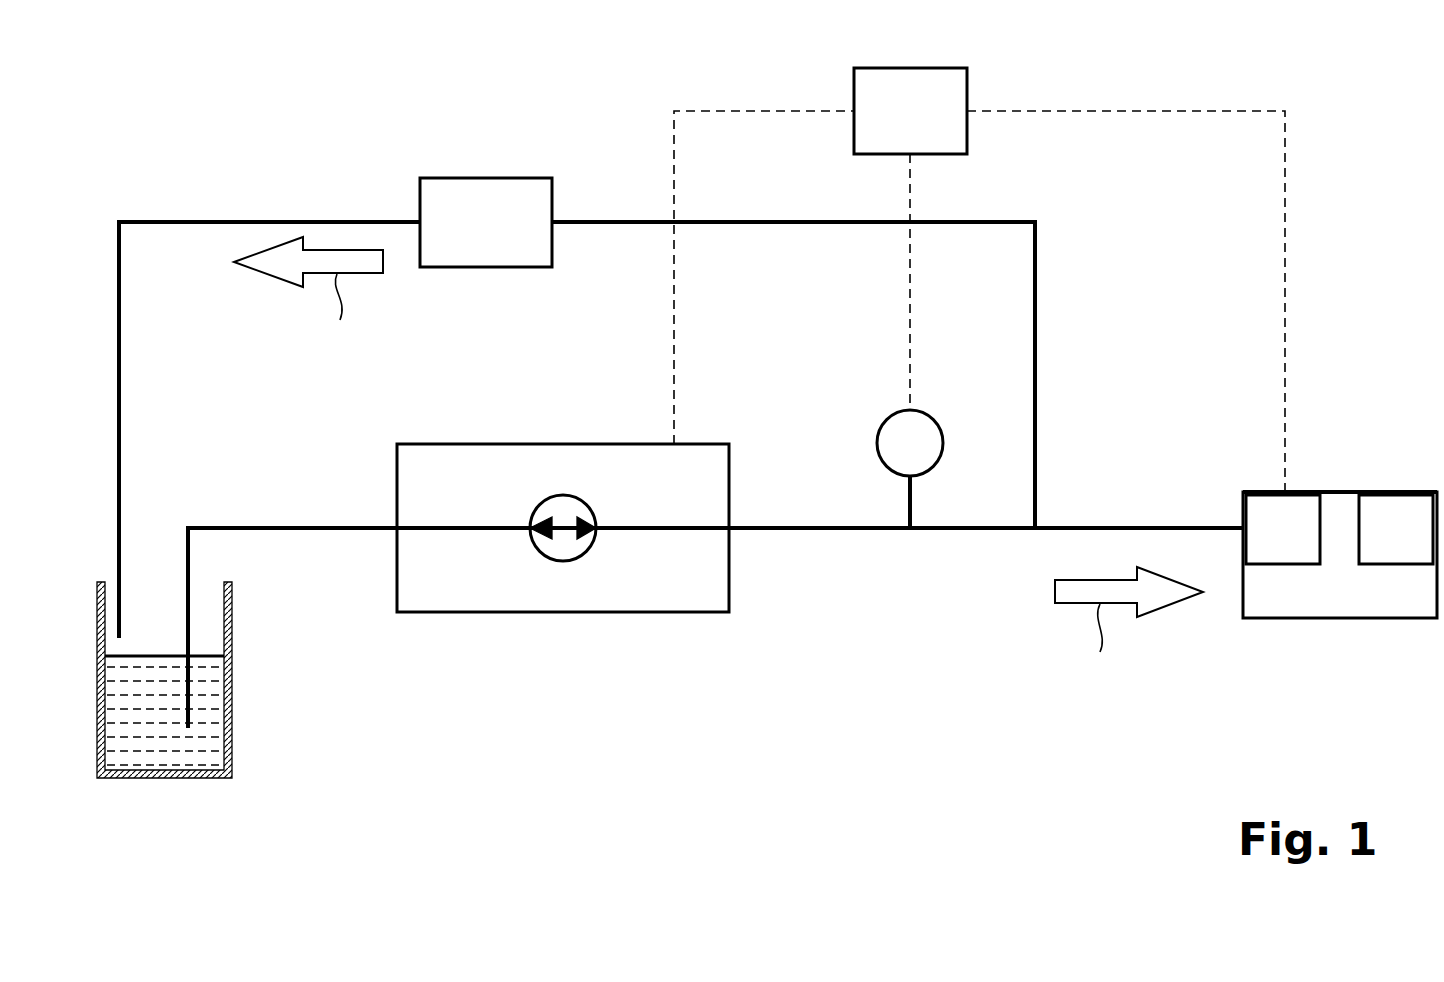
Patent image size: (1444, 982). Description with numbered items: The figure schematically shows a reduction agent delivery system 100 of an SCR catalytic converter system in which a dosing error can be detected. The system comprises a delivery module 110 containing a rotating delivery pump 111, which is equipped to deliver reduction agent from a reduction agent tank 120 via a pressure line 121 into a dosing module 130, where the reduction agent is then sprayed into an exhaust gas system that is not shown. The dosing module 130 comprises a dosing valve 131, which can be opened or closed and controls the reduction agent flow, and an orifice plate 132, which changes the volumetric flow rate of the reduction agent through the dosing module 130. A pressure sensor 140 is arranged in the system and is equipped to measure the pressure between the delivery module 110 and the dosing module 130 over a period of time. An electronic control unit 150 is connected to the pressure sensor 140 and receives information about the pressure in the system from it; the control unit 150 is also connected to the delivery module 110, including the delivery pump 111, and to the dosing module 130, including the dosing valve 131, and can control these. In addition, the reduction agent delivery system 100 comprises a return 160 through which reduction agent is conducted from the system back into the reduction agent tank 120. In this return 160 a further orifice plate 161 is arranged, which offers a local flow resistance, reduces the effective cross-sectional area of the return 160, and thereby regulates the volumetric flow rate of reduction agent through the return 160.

The reduction agent delivery system 100 is at (222, 128).
The delivery module 110 is at (466, 612).
The delivery pump 111 is at (593, 510).
The reduction agent tank 120 is at (232, 717).
The pressure line 121 is at (1153, 522).
The dosing module 130 is at (1338, 603).
The dosing valve 131 is at (1257, 508).
The orifice plate 132 is at (1402, 508).
The pressure sensor 140 is at (932, 418).
The electronic control unit 150 is at (967, 84).
The return 160 is at (801, 221).
The orifice plate 161 is at (494, 178).